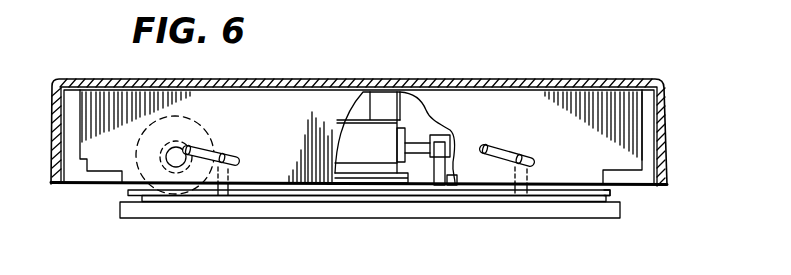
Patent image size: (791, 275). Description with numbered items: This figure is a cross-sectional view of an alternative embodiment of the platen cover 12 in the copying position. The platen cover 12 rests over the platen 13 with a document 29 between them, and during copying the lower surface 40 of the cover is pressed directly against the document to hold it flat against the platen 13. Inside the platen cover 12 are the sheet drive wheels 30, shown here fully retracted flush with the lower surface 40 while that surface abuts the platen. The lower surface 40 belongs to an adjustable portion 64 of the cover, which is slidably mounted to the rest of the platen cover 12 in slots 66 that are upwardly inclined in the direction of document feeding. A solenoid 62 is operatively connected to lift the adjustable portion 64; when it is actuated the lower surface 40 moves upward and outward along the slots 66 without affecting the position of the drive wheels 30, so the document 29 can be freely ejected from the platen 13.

The platen cover 12 is at (503, 79).
The platen 13 is at (418, 210).
The document 29 is at (233, 202).
The sheet drive wheels 30 is at (138, 157).
The lower surface of the platen cover 40 is at (314, 202).
The solenoid 62 is at (371, 133).
The adjustable portion of the platen cover 64 is at (612, 193).
The slots 66 is at (216, 150).